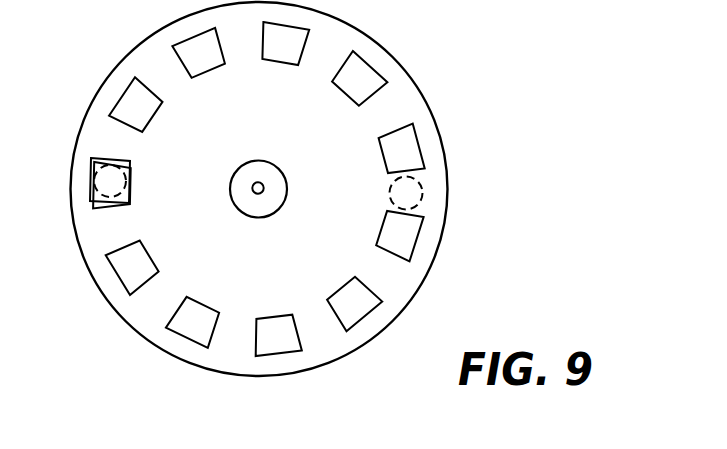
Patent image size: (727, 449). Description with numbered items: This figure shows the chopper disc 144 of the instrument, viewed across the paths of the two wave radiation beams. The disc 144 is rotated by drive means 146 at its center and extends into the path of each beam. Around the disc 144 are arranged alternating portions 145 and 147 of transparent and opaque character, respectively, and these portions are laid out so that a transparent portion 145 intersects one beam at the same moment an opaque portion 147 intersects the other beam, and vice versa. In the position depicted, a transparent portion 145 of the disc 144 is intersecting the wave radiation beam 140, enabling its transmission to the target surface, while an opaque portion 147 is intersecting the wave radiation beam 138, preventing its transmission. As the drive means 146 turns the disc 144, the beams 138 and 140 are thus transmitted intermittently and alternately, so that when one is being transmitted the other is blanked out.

The wave radiation beam 138 is at (423, 183).
The wave radiation beam 140 is at (91, 198).
The disc 144 is at (432, 112).
The transparent portion 145 is at (378, 84).
The drive means 146 is at (274, 163).
The opaque portion 147 is at (406, 193).